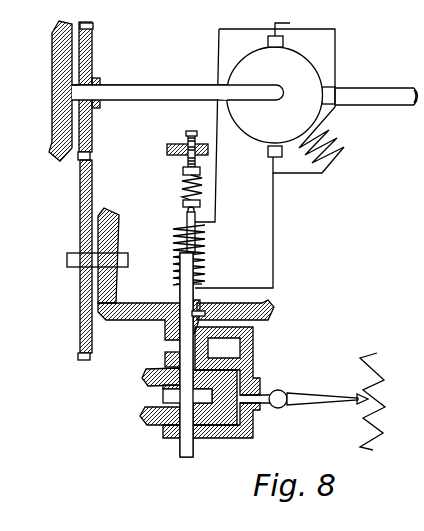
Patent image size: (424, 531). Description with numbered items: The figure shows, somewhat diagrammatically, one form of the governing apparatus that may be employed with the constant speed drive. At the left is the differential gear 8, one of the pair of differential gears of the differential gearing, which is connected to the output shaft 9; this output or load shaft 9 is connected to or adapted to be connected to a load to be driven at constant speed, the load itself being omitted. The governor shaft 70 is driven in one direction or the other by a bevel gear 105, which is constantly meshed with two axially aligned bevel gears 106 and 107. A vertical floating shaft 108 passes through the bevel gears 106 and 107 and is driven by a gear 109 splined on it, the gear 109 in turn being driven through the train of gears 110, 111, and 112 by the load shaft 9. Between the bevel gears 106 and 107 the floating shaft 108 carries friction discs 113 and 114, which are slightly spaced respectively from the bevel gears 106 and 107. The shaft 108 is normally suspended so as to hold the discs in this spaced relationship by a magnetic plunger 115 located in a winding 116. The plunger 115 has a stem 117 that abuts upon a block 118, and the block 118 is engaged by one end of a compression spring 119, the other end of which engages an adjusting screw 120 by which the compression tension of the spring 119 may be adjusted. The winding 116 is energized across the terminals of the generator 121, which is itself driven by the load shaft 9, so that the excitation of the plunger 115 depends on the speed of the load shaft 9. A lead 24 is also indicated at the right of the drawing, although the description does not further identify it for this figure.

The differential gear 8 is at (60, 62).
The output shaft 9 is at (165, 91).
The lead 24 is at (423, 301).
The governor shaft 70 is at (265, 393).
The bevel gear 105 is at (250, 416).
The bevel gear 106 is at (145, 371).
The bevel gear 107 is at (145, 415).
The floating shaft 108 is at (184, 458).
The gear 109 is at (132, 318).
The gear 110 is at (114, 287).
The gear 111 is at (79, 289).
The gear 112 is at (93, 134).
The friction disc 113 is at (163, 388).
The friction disc 114 is at (163, 402).
The magnetic plunger 115 is at (204, 269).
The winding 116 is at (208, 249).
The stem 117 is at (187, 221).
The block 118 is at (183, 204).
The compression spring 119 is at (182, 188).
The adjusting screw 120 is at (188, 138).
The generator 121 is at (299, 59).